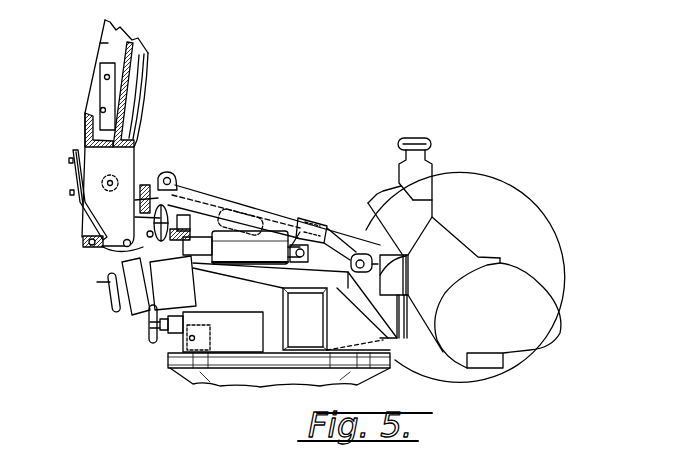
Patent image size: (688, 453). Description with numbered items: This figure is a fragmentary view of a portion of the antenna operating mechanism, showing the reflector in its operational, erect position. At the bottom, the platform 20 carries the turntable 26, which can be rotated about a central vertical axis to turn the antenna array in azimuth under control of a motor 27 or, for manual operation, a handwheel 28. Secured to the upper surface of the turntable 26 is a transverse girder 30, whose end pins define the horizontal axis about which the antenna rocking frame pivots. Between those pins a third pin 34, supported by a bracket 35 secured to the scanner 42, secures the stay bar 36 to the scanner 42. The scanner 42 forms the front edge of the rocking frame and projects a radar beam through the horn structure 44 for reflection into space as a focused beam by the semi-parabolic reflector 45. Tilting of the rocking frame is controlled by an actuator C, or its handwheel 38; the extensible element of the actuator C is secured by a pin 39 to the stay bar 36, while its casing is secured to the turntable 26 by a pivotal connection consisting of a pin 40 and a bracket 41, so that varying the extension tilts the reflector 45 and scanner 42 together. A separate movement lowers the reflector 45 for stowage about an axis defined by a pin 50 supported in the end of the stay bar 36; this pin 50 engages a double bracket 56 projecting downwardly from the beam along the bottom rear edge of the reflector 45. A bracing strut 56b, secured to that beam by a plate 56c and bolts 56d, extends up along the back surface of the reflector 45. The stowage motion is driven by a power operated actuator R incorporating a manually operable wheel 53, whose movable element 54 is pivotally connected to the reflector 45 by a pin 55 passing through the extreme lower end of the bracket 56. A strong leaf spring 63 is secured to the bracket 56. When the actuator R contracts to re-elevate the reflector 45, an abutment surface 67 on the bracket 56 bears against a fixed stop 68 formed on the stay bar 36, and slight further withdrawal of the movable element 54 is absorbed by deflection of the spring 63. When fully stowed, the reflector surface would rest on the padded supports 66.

The platform 20 is at (205, 373).
The turntable 26 is at (163, 365).
The motor 27 is at (212, 315).
The handwheel 28 is at (147, 340).
The transverse girder 30 is at (283, 292).
The third pin 34 is at (360, 252).
The bracket 35 is at (513, 190).
The stay bar 36 is at (262, 235).
The handwheel 38 is at (122, 298).
The pin 39 is at (175, 186).
The pin 40 is at (193, 339).
The bracket 41 is at (160, 350).
The scanner 42 is at (545, 232).
The horn structure 44 is at (368, 203).
The semi-parabolic reflector 45 is at (150, 58).
The pin 50 is at (113, 181).
The manually operable wheel 53 is at (258, 245).
The movable element 54 is at (148, 250).
The pin 55 is at (143, 245).
The double bracket 56 is at (100, 156).
The bracing strut 56b is at (108, 43).
The plate 56c is at (105, 72).
The bolts 56d is at (106, 80).
The leaf spring 63 is at (75, 225).
The padded supports 66 is at (415, 140).
The abutment surface 67 is at (78, 206).
The fixed stop 68 is at (172, 178).
The actuator C is at (173, 288).
The power operated actuator R is at (272, 245).